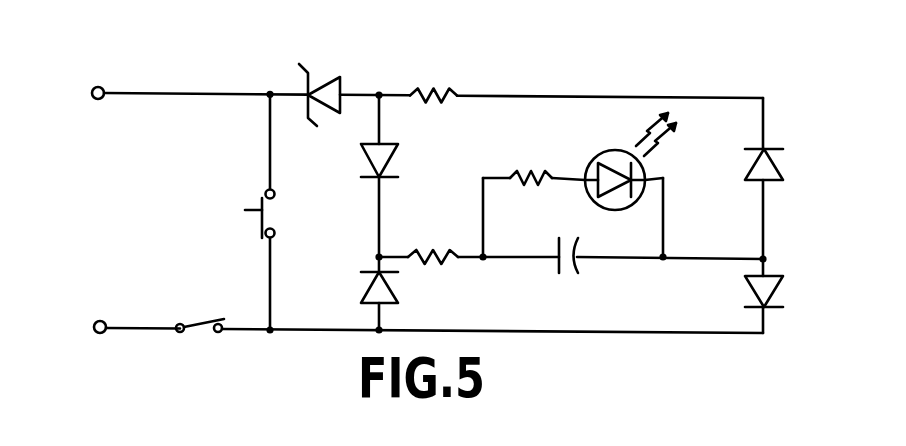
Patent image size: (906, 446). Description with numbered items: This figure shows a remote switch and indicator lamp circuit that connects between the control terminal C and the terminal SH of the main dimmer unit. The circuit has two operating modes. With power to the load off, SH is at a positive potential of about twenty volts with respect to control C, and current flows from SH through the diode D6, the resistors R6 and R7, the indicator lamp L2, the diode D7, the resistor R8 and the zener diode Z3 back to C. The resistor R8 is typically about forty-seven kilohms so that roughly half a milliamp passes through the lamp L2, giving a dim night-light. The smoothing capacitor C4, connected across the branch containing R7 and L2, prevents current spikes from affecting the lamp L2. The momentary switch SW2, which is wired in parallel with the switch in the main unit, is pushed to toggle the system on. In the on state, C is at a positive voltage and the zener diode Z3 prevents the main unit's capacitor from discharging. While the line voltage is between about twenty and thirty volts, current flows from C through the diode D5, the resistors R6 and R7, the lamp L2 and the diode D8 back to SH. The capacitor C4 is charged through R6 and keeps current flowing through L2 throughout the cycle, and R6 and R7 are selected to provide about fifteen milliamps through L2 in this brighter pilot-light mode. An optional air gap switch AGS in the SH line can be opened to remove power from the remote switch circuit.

The control C is at (76, 95).
The SH terminal SH is at (63, 329).
The air gap switch AGS is at (200, 344).
The momentary switch SW2 is at (226, 214).
The zener diode Z3 is at (324, 81).
The resistor R8 is at (436, 77).
The diode D5 is at (401, 159).
The diode D6 is at (402, 294).
The resistor R6 is at (433, 242).
The resistor R7 is at (531, 161).
The indicator lamp L2 is at (638, 161).
The smoothing capacitor C4 is at (572, 273).
The diode D7 is at (791, 162).
The diode D8 is at (791, 290).